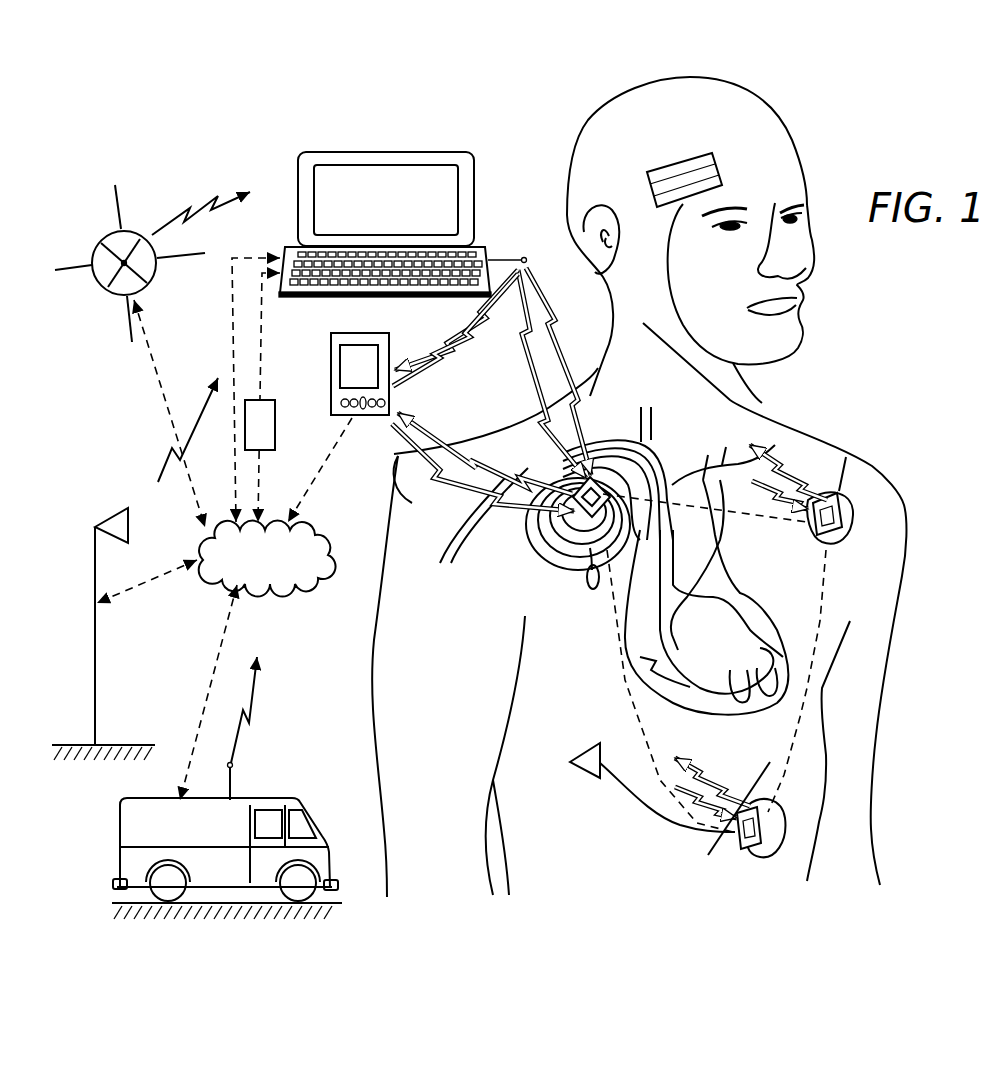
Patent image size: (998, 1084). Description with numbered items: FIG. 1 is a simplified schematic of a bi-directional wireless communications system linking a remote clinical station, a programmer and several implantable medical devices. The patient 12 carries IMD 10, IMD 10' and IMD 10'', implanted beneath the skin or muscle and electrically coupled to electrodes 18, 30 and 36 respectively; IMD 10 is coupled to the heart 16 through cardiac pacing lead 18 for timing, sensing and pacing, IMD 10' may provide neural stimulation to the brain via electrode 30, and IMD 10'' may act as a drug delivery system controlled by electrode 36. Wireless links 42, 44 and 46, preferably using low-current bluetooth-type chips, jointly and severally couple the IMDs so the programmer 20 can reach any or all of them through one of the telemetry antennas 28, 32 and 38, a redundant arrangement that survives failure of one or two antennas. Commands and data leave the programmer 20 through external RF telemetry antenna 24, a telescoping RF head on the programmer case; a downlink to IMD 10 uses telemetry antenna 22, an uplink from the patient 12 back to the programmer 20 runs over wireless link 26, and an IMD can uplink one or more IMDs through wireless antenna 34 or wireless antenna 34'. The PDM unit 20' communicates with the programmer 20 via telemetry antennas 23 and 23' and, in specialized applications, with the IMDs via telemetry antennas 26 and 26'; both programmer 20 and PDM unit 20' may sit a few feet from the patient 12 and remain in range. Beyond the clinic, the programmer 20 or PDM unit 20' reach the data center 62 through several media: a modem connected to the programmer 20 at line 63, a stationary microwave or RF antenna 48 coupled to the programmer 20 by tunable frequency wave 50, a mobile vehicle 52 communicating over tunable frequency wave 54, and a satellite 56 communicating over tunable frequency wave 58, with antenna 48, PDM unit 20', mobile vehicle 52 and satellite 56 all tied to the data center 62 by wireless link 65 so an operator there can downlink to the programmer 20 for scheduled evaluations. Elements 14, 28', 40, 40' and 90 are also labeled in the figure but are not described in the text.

The implantable medical device 10 is at (560, 537).
The implantable medical device 10' is at (795, 848).
The implantable medical device 10'' is at (854, 524).
The patient 12 is at (868, 460).
The lead 14 is at (592, 590).
The heart 16 is at (738, 712).
The cardiac pacing lead 18 is at (683, 712).
The programmer 20 is at (385, 199).
The PDM unit 20' is at (344, 360).
The telemetry antenna 22 is at (514, 393).
The telemetry antenna 23 is at (456, 320).
The telemetry antenna 23' is at (455, 330).
The external RF telemetry antenna 24 is at (495, 257).
The wireless link 26 is at (554, 374).
The telemetry antenna 26' is at (485, 440).
The telemetry antenna 28 is at (587, 371).
The uplink telemetry 28' is at (483, 472).
The electrode 30 is at (663, 162).
The telemetry antenna 32 is at (841, 478).
The wireless antenna 34 is at (705, 529).
The wireless antenna 34' is at (797, 456).
The electrode 36 is at (592, 765).
The telemetry antenna 38 is at (755, 782).
The telemetry signals 40 is at (697, 812).
The telemetry signal 40' is at (736, 824).
The wireless link 42 is at (797, 681).
The wireless link 44 is at (818, 602).
The wireless link 46 is at (628, 700).
The stationary microwave and/or RF antenna 48 is at (96, 662).
The tunable frequency wave 50 is at (196, 428).
The mobile vehicle 52 is at (118, 838).
The tunable frequency wave 54 is at (237, 747).
The satellite 56 is at (97, 246).
The tunable frequency wave 58 is at (172, 228).
The data center 62 is at (300, 575).
The line 63 is at (260, 343).
The wireless link 65 is at (232, 350).
The communication link 90 is at (230, 262).